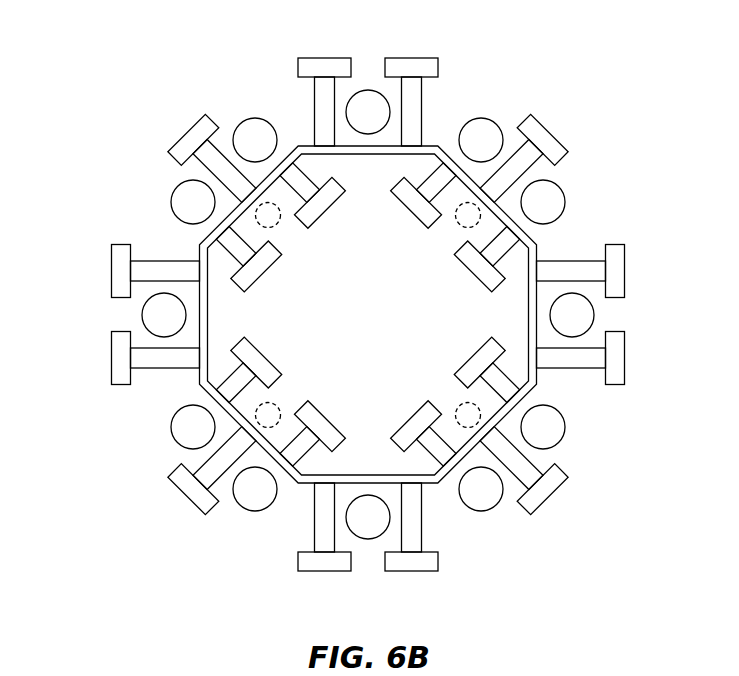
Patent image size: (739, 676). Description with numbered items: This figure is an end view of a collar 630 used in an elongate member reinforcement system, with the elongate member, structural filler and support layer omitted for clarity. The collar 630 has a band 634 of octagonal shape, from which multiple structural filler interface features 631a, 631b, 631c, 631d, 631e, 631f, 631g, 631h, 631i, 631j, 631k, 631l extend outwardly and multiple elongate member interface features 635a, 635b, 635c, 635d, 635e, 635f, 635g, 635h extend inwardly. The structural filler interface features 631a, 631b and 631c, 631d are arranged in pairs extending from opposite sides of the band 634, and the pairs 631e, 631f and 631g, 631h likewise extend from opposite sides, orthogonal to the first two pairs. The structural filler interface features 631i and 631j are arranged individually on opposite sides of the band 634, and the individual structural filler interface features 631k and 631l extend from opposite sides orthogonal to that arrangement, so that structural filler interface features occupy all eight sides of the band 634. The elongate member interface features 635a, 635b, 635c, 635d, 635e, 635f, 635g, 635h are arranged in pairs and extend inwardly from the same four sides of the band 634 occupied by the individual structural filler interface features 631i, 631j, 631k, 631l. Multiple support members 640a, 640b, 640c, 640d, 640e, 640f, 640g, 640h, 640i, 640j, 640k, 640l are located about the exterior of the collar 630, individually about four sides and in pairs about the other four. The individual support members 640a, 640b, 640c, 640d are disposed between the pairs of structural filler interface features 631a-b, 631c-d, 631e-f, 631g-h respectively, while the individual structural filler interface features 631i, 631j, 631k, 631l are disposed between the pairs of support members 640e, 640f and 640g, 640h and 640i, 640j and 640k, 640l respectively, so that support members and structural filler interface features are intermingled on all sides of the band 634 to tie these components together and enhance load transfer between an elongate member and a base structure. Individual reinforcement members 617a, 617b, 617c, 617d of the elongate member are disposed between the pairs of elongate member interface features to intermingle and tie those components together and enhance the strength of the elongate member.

The collar 630 is at (262, 42).
The band 634 is at (437, 146).
The structural filler interface feature 631a is at (110, 271).
The structural filler interface feature 631b is at (110, 358).
The structural filler interface feature 631c is at (625, 271).
The structural filler interface feature 631d is at (625, 358).
The structural filler interface feature 631e is at (327, 57).
The structural filler interface feature 631f is at (411, 57).
The structural filler interface feature 631g is at (327, 572).
The structural filler interface feature 631h is at (411, 572).
The structural filler interface feature 631i is at (185, 133).
The structural filler interface feature 631j is at (551, 496).
The structural filler interface feature 631k is at (185, 496).
The structural filler interface feature 631l is at (551, 132).
The support member 640a is at (142, 315).
The support member 640b is at (594, 315).
The support member 640c is at (368, 89).
The support member 640d is at (368, 539).
The support member 640e is at (256, 117).
The support member 640f is at (171, 202).
The support member 640g is at (565, 431).
The support member 640h is at (481, 511).
The support member 640i is at (171, 431).
The support member 640j is at (255, 511).
The support member 640k is at (482, 117).
The support member 640l is at (565, 202).
The elongate member interface feature 635a is at (327, 211).
The elongate member interface feature 635b is at (263, 274).
The elongate member interface feature 635c is at (473, 355).
The elongate member interface feature 635d is at (409, 420).
The elongate member interface feature 635e is at (263, 355).
The elongate member interface feature 635f is at (327, 420).
The elongate member interface feature 635g is at (409, 211).
The elongate member interface feature 635h is at (473, 274).
The reinforcement member 617a is at (277, 224).
The reinforcement member 617b is at (459, 406).
The reinforcement member 617c is at (277, 406).
The reinforcement member 617d is at (459, 224).